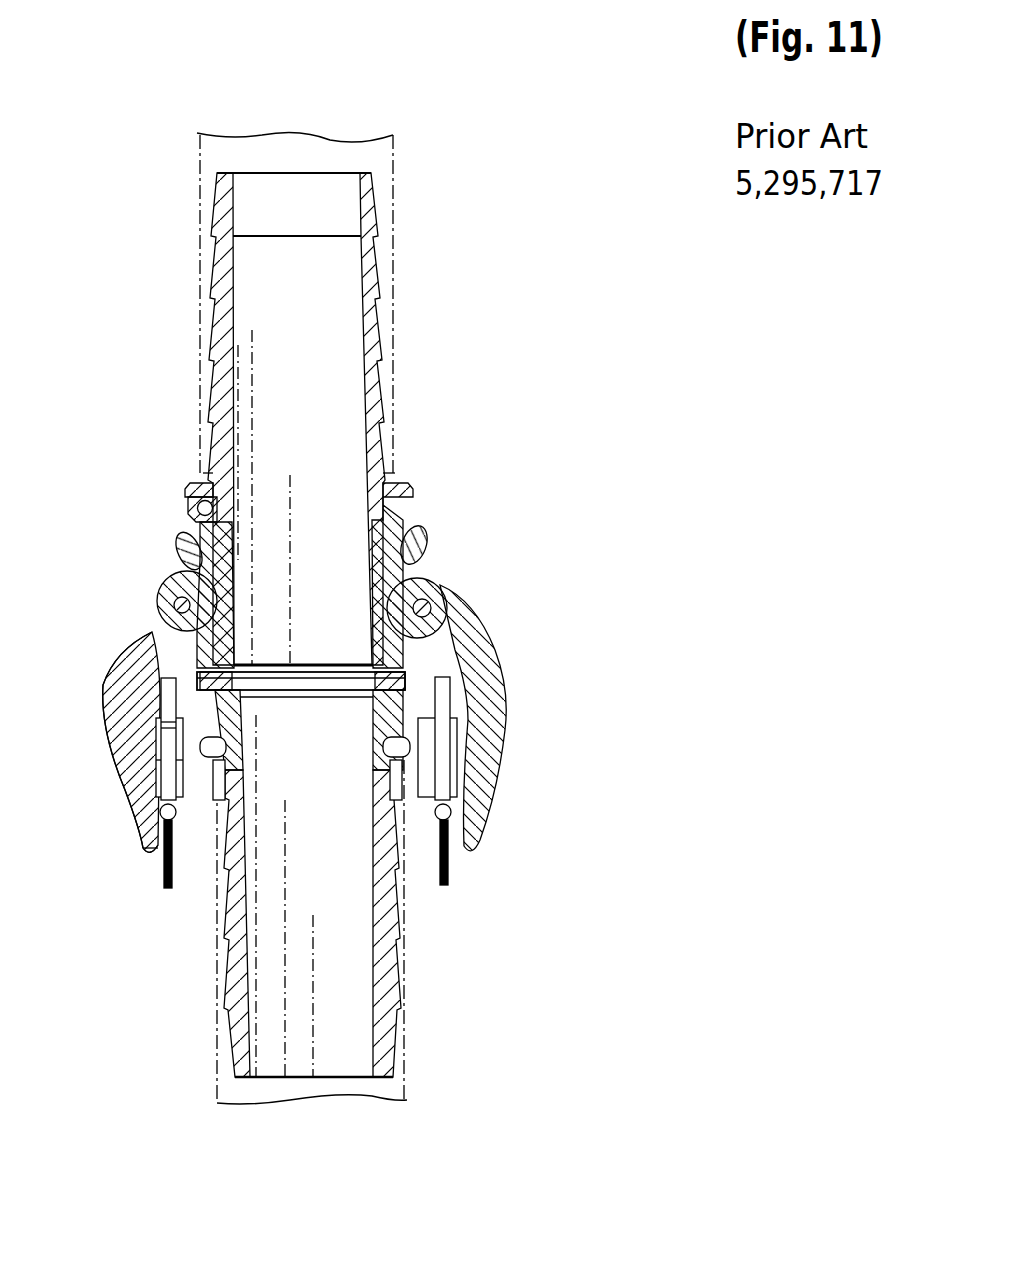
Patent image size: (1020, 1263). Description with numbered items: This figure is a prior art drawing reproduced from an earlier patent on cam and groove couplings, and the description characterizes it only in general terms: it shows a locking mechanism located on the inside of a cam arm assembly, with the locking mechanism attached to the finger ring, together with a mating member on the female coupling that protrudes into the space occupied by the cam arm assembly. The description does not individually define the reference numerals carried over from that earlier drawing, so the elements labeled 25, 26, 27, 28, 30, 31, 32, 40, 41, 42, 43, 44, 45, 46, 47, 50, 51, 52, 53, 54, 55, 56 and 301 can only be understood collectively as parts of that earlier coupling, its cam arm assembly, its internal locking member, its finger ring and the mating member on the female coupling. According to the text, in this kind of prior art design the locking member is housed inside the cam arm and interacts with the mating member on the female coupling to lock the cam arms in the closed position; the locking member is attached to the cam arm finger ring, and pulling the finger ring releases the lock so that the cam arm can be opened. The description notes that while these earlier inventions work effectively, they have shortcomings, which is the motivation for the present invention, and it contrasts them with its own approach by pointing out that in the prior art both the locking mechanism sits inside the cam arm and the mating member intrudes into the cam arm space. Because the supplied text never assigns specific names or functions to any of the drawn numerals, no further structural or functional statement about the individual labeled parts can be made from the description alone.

The pivot pin 25 is at (140, 650).
The gasket 26 is at (238, 664).
The cam lever handle 27 is at (142, 640).
The lower hose adapter 28 is at (390, 948).
The upper hose adapter body 30 is at (386, 398).
The coupler body lug 31 is at (228, 606).
The hose barbs 32 is at (381, 343).
The O-ring seat 40 is at (152, 605).
The cam disc 41 is at (166, 592).
The cam lobe 42 is at (183, 596).
The latch lug 43 is at (205, 762).
The pin rod 44 is at (163, 778).
The pin ball 45 is at (160, 806).
The lever outer surface 46 is at (140, 684).
The lever lower end 47 is at (135, 668).
The latch notch 50 is at (178, 835).
The housing rib 51 is at (153, 767).
The pin housing 52 is at (150, 740).
The socket bore 53 is at (241, 735).
The housing shoulder 54 is at (148, 758).
The lever tip 55 is at (143, 798).
The safety pin 56 is at (176, 872).
The right cam assembly 301 is at (400, 548).